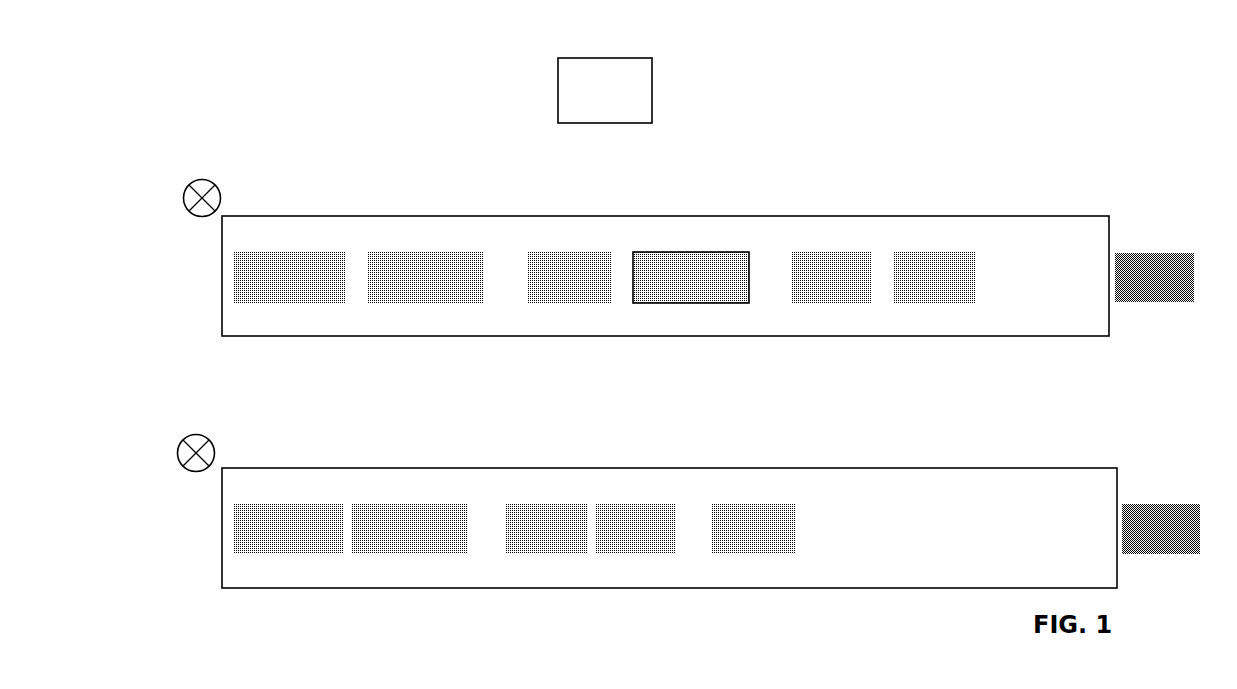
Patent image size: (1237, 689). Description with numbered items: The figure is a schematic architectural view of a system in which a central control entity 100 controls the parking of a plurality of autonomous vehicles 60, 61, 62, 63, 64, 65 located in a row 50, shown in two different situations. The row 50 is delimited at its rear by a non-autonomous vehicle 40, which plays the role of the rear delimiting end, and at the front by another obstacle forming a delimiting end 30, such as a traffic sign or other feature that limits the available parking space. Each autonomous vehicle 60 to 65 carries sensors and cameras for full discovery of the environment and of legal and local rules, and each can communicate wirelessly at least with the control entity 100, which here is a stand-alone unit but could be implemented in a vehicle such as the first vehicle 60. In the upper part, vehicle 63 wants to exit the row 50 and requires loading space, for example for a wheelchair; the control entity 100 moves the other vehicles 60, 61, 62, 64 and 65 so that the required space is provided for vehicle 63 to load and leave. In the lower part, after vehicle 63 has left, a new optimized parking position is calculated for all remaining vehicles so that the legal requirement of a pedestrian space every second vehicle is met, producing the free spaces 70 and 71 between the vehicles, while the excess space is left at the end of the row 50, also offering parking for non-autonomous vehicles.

The central control entity 100 is at (605, 90).
The delimiting end 30 is at (196, 173).
The non-autonomous vehicle 40 is at (1187, 248).
The row 50 is at (1088, 215).
The autonomous vehicle 60 is at (283, 247).
The autonomous vehicle 61 is at (437, 242).
The autonomous vehicle 62 is at (563, 242).
The autonomous vehicle 63 is at (710, 243).
The autonomous vehicle 64 is at (833, 243).
The autonomous vehicle 65 is at (935, 243).
The free space 70 is at (488, 548).
The free space 71 is at (700, 546).